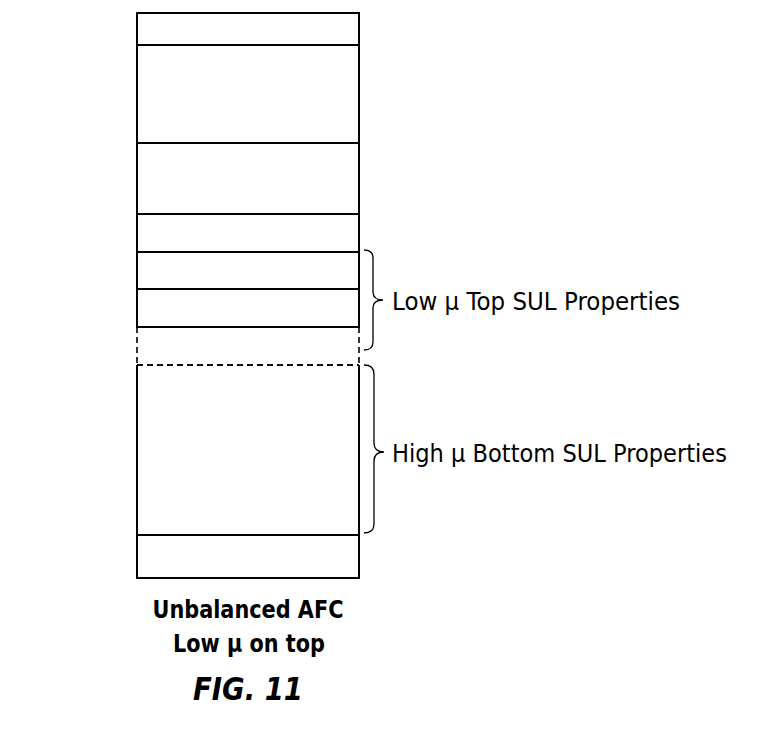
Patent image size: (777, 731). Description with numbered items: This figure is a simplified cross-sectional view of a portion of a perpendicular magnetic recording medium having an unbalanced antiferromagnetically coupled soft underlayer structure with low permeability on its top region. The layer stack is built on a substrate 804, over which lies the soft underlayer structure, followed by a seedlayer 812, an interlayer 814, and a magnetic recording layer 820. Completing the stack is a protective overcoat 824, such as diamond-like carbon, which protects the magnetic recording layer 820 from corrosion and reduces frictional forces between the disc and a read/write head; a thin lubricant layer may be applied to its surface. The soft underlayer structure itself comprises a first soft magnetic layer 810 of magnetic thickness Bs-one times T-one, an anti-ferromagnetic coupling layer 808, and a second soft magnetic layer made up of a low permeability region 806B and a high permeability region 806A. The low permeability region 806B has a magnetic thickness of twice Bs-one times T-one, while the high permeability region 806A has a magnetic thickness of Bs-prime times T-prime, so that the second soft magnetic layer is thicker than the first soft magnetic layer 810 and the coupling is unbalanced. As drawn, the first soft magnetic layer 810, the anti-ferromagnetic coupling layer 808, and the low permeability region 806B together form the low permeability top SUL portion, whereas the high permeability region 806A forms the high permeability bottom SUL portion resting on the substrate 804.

The protective overcoat 824 is at (359, 28).
The magnetic recording layer 820 is at (359, 93).
The interlayer 814 is at (359, 178).
The seedlayer 812 is at (359, 233).
The first soft magnetic layer 810 is at (137, 270).
The anti-ferromagnetic coupling layer 808 is at (137, 308).
The low permeability region 806B is at (137, 345).
The high permeability region 806A is at (137, 450).
The substrate 804 is at (359, 553).